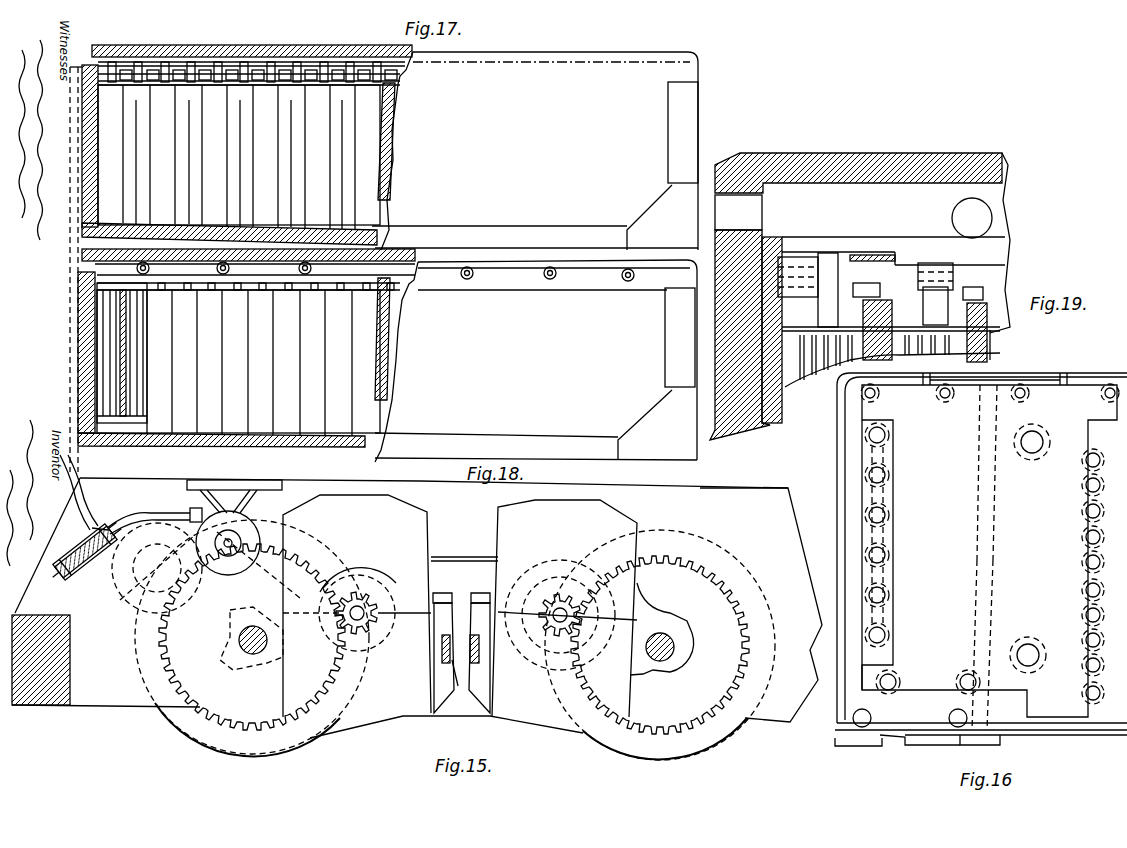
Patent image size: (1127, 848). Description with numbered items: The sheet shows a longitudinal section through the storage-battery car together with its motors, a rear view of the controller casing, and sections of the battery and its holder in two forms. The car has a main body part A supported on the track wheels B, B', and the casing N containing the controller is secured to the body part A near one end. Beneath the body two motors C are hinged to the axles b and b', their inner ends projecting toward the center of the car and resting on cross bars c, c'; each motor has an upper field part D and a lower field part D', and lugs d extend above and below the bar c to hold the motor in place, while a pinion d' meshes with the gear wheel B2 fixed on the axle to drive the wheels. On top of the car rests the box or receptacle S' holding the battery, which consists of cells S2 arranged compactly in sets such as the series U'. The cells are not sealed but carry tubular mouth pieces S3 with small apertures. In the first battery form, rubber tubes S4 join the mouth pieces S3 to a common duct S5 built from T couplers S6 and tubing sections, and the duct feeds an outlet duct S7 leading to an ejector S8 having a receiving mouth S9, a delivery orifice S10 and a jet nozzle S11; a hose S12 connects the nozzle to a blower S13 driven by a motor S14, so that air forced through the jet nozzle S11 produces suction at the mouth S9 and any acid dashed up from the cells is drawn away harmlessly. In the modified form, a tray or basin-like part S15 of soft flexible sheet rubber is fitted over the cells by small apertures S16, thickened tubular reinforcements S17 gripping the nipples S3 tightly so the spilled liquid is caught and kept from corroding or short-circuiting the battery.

In FIG. 17, the box or receptacle S' is at (535, 151).
In FIG. 18, the box or receptacle S' is at (536, 361).
In FIG. 19, the box or receptacle S' is at (746, 345).
In FIG. 17, the cells S2 is at (224, 164).
In FIG. 18, the cells S2 is at (55, 372).
In FIG. 19, the cells S2 is at (990, 357).
In FIG. 17, the tubular mouth pieces S3 is at (112, 85).
In FIG. 18, the tubular mouth pieces S3 is at (157, 290).
In FIG. 19, the tubular mouth pieces S3 is at (902, 307).
In FIG. 17, the rubber tubes S4 is at (118, 60).
In FIG. 17, the duct S5 is at (158, 62).
In FIG. 17, the T couplers S6 is at (180, 62).
In FIG. 15, the outlet duct S7 is at (79, 492).
In FIG. 15, the ejector S8 is at (84, 552).
In FIG. 15, the receiving mouth S9 is at (93, 528).
In FIG. 15, the delivery orifice S10 is at (47, 587).
In FIG. 15, the jet nozzle S11 is at (92, 558).
In FIG. 15, the tube or hose S12 is at (150, 516).
In FIG. 15, the blower S13 is at (243, 539).
In FIG. 15, the motor S14 is at (408, 578).
In FIG. 18, the tray or basin-like part S15 is at (272, 282).
In FIG. 19, the tray or basin-like part S15 is at (870, 244).
In FIG. 18, the small apertures S16 is at (184, 290).
In FIG. 19, the small apertures S16 is at (812, 271).
In FIG. 19, the thickened tubular reinforcements S17 is at (853, 288).
In FIG. 17, the series of cells U' is at (239, 155).
In FIG. 18, the series of cells U' is at (238, 361).
In FIG. 19, the series of cells U' is at (898, 366).
In FIG. 16, the casing N is at (912, 740).
In FIG. 15, the main body part A is at (744, 508).
In FIG. 15, the track wheel B is at (660, 645).
In FIG. 15, the track wheel B' is at (252, 638).
In FIG. 15, the gear wheel B2 is at (466, 629).
In FIG. 15, the axle b is at (675, 651).
In FIG. 15, the axle b' is at (237, 650).
In FIG. 15, the motor C is at (466, 545).
In FIG. 15, the upper field part D is at (357, 606).
In FIG. 15, the lower field part D' is at (510, 608).
In FIG. 15, the lugs or projections d is at (461, 653).
In FIG. 15, the pinions d' is at (475, 615).
In FIG. 15, the bar c is at (460, 677).
In FIG. 15, the bar c' is at (460, 649).